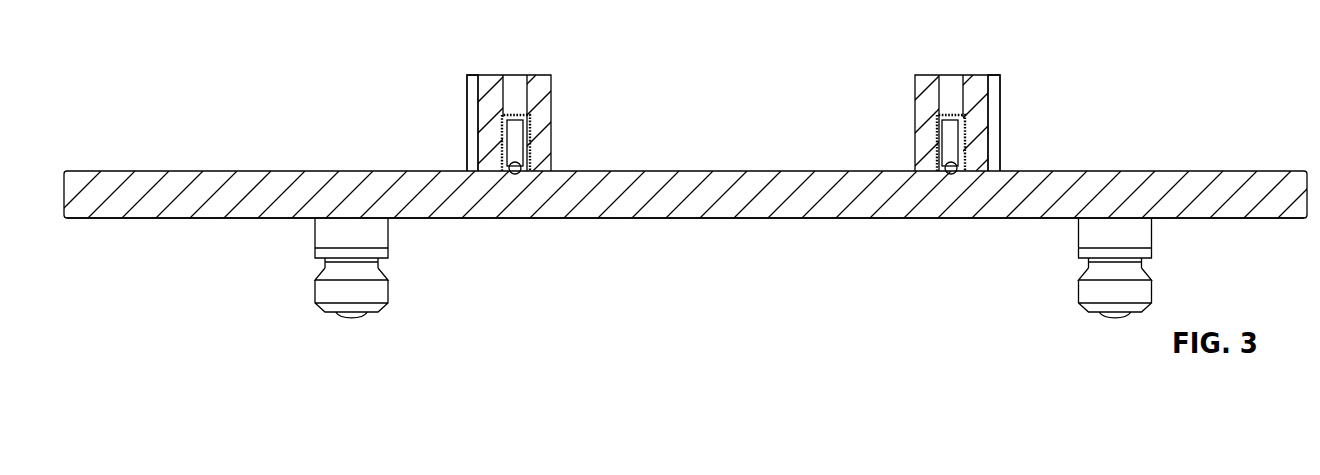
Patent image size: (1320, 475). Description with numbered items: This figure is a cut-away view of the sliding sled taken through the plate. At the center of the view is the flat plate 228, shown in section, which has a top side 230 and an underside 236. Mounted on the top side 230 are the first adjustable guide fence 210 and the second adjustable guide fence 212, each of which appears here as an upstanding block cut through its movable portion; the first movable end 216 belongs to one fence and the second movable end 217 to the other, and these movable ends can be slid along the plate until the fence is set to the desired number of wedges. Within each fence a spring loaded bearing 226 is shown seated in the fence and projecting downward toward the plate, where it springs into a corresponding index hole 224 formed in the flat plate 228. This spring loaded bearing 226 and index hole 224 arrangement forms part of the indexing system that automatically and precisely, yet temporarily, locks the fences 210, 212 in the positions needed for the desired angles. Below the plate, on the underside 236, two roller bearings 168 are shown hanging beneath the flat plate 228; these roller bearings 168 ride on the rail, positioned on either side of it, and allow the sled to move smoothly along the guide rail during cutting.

The roller bearings 168 is at (363, 290).
The first adjustable guide fence 210 is at (925, 87).
The second adjustable guide fence 212 is at (542, 83).
The first movable end 216 is at (993, 103).
The second movable end 217 is at (467, 87).
The index hole 224 is at (510, 163).
The spring loaded bearing 226 is at (518, 160).
The flat plate 228 is at (235, 192).
The top side 230 is at (97, 170).
The underside 236 is at (150, 220).